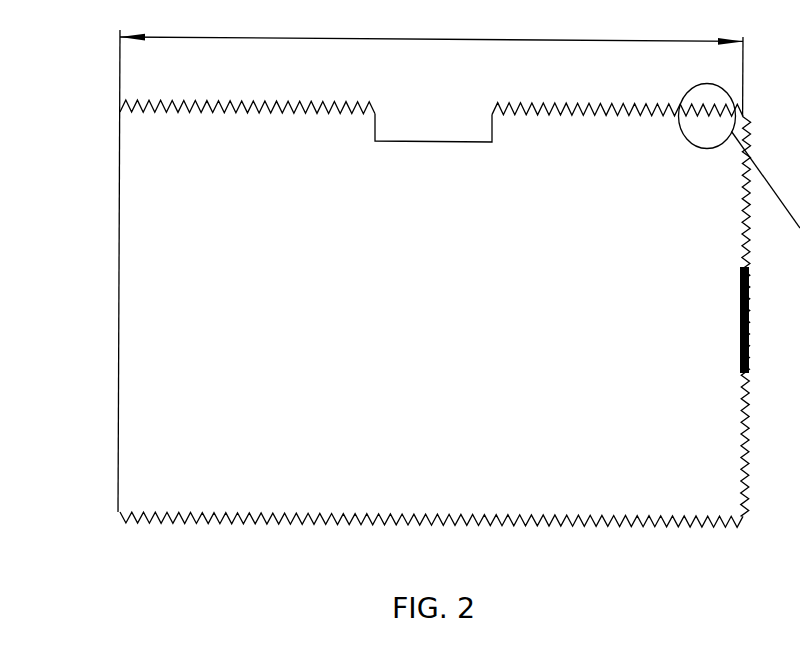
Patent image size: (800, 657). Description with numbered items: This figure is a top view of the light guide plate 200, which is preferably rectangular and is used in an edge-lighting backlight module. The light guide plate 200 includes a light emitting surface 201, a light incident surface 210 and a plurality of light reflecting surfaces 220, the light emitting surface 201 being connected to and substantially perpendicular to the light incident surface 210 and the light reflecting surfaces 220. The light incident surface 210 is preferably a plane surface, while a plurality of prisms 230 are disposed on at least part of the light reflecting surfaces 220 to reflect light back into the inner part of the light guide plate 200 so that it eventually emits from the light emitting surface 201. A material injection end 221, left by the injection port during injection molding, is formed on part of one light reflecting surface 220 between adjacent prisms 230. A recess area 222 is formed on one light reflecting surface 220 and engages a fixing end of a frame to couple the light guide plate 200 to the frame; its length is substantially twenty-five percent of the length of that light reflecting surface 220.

The light guide plate 200 is at (80, 52).
The light emitting surface 201 is at (655, 478).
The light incident surface 210 is at (118, 443).
The light reflecting surfaces 220 is at (582, 102).
The material injection end 221 is at (748, 312).
The recess area 222 is at (429, 122).
The prisms 230 is at (343, 518).